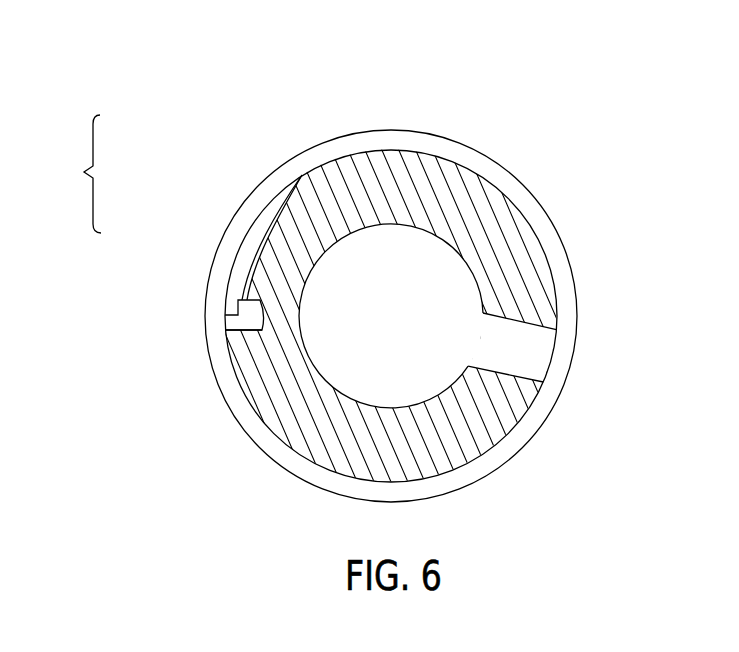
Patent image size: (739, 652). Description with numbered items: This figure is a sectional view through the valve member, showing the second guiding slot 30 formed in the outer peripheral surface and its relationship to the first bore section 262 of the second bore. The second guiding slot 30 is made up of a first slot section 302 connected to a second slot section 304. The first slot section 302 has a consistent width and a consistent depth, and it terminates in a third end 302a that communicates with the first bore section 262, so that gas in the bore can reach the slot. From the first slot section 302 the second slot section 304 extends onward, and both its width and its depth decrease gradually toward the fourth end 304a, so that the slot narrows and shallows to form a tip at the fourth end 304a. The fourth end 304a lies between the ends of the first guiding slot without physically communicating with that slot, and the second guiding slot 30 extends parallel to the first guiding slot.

The second guiding slot 30 is at (76, 174).
The first slot section 302 is at (240, 240).
The third end 302a is at (237, 315).
The second slot section 304 is at (273, 198).
The fourth end 304a is at (302, 177).
The first bore section 262 is at (234, 327).